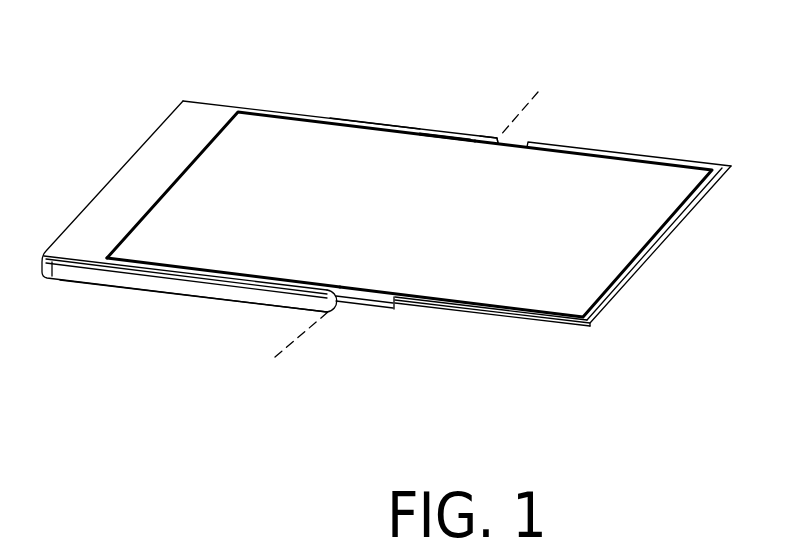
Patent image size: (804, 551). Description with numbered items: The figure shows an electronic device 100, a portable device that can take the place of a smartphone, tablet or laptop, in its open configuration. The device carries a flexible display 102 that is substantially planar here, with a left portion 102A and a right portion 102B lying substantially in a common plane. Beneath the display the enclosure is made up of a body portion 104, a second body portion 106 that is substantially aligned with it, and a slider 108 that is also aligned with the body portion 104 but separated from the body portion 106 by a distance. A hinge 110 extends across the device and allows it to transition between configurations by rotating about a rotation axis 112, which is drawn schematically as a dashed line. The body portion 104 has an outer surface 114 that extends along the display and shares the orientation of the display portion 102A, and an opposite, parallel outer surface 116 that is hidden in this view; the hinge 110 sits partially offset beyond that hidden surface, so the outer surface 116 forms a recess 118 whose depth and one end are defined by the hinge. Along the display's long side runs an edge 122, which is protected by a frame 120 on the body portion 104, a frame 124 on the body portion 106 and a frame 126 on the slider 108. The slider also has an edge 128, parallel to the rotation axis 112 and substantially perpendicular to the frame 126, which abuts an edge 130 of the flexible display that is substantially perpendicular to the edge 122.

The electronic device 100 is at (610, 435).
The flexible display 102 is at (409, 181).
The portion of the flexible display 102A is at (405, 145).
The portion of the flexible display 102B is at (637, 180).
The body portion 104 is at (100, 188).
The body portion 106 is at (383, 314).
The slider 108 is at (590, 338).
The hinge 110 is at (330, 312).
The rotation axis 112 is at (520, 110).
The outer surface 114 is at (182, 123).
The outer surface 116 is at (235, 300).
The recess 118 is at (178, 333).
The frame 120 is at (363, 123).
The edge of the flexible display 122 is at (445, 137).
The frame 124 is at (477, 134).
The frame 126 is at (577, 147).
The edge of the slider 128 is at (648, 267).
The edge of the flexible display 130 is at (672, 223).